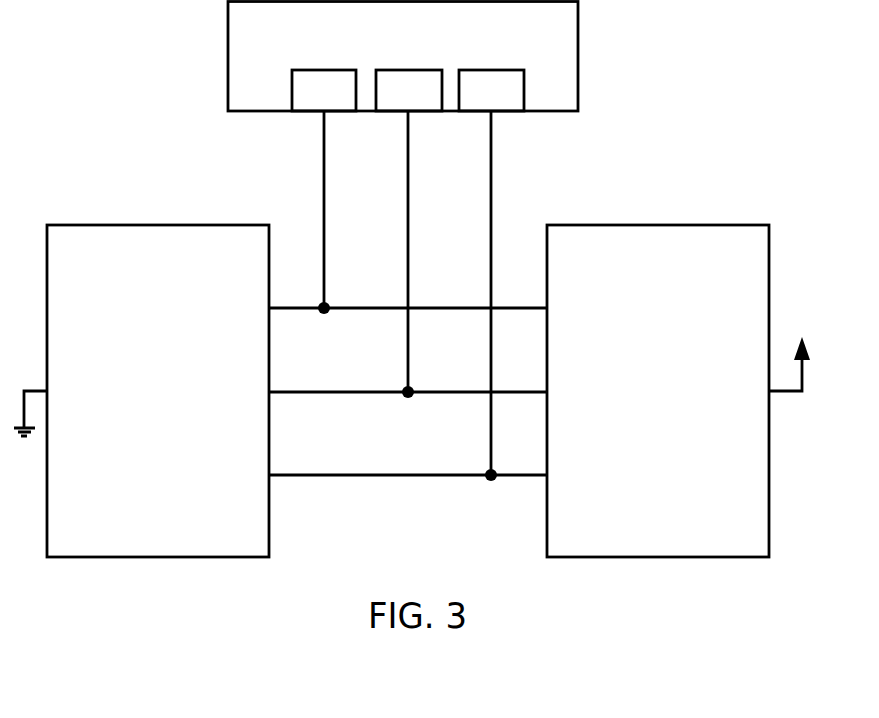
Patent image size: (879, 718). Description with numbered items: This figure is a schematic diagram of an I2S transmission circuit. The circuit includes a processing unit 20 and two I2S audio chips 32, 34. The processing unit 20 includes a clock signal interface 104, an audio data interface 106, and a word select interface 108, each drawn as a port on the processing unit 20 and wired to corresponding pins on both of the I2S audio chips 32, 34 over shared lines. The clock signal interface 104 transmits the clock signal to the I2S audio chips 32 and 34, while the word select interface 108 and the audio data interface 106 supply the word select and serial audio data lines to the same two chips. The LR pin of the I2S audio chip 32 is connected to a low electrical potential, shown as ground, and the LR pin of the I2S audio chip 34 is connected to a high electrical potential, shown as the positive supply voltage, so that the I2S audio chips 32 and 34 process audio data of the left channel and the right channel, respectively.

The processing unit 20 is at (228, 25).
The clock signal interface 104 is at (408, 192).
The word select interface 108 is at (408, 234).
The audio data interface 106 is at (408, 275).
The I2S audio chip 32 is at (73, 225).
The I2S audio chip 34 is at (600, 225).